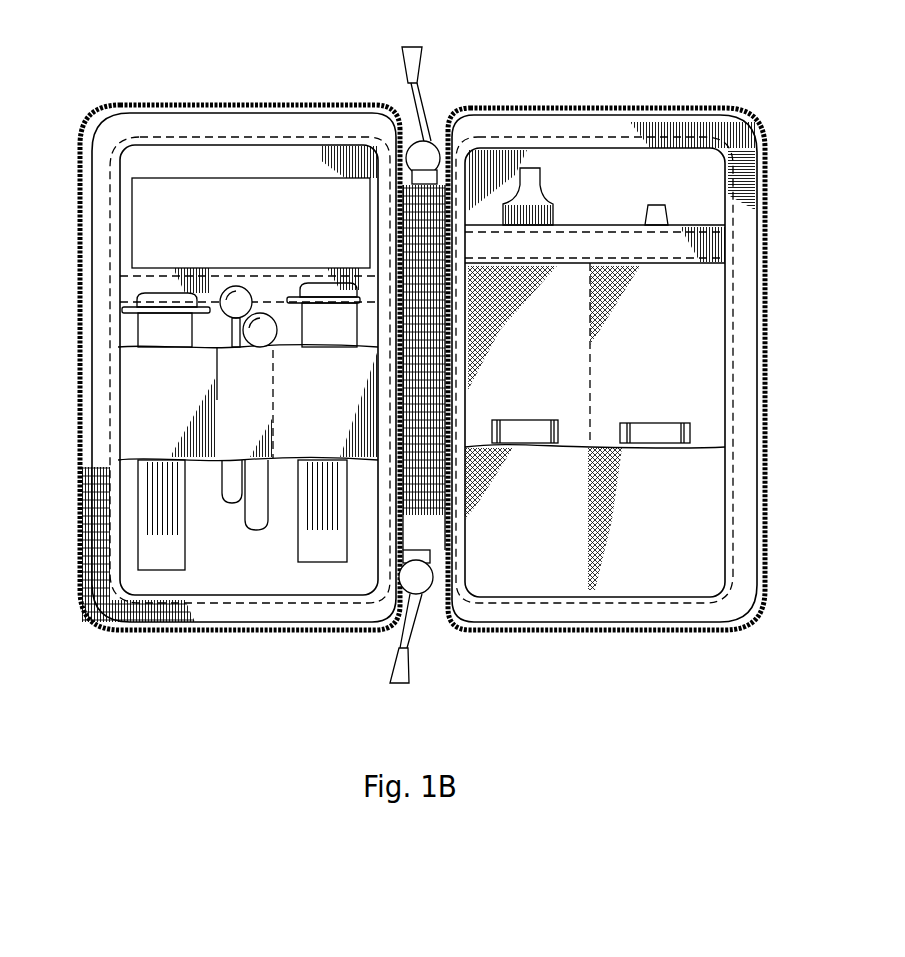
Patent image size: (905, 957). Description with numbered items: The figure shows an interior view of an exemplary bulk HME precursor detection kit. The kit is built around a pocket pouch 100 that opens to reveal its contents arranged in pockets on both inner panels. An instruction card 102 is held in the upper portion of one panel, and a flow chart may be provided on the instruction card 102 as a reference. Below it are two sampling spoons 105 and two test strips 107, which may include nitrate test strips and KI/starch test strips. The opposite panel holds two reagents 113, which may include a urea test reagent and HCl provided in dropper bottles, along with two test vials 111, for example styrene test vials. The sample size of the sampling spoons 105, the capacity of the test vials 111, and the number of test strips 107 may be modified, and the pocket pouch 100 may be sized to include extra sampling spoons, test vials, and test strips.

The pocket pouch 100 is at (636, 107).
The instruction card 102 is at (200, 200).
The sampling spoons 105 is at (233, 288).
The test strips 107 is at (158, 562).
The test vials 111 is at (533, 433).
The reagents 113 is at (532, 168).